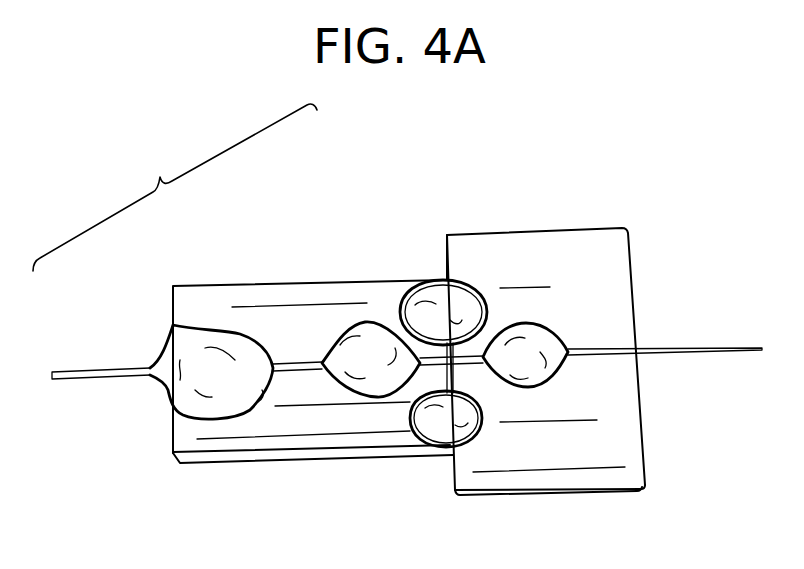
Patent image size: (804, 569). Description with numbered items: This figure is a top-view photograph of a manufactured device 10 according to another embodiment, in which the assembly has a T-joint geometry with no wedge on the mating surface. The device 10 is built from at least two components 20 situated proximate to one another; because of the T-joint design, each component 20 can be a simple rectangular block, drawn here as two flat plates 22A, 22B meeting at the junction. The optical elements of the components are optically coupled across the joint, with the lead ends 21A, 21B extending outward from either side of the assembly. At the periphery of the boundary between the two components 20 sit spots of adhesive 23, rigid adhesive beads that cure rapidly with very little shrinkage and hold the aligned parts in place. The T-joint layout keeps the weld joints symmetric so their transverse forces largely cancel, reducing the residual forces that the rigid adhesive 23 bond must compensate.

The device 10 is at (175, 187).
The component 20 is at (409, 337).
The first lead wire end 21A is at (80, 366).
The second lead wire end 21B is at (708, 360).
The first plate 22A is at (258, 468).
The second plate 22B is at (552, 496).
The adhesive 23 is at (412, 384).